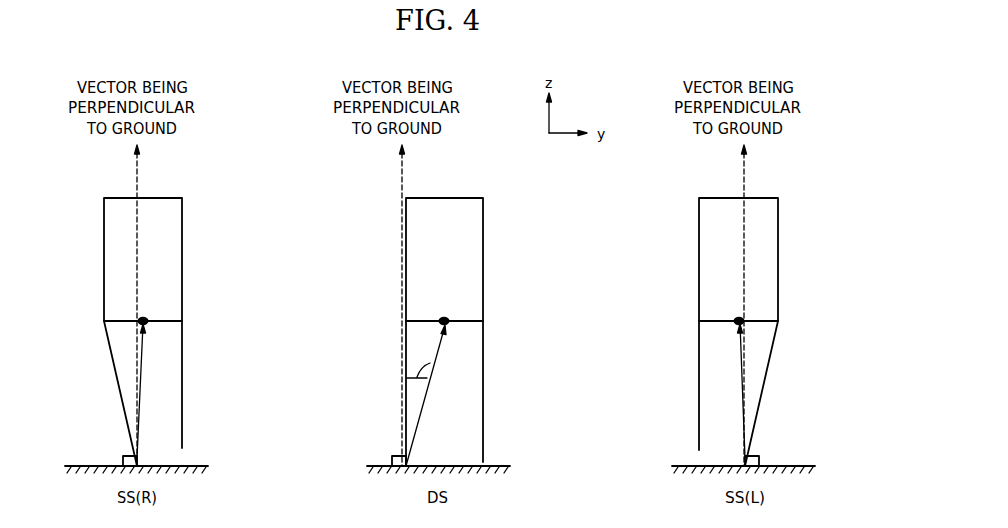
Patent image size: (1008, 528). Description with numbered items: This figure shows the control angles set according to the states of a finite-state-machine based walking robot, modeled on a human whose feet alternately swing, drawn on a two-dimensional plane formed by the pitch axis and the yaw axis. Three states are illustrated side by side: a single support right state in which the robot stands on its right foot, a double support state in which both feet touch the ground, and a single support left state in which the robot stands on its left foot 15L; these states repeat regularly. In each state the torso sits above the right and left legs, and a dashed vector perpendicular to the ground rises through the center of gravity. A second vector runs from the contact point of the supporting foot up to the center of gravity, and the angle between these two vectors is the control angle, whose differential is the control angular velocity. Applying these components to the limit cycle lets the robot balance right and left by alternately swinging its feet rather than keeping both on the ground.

The left foot 15L is at (759, 457).